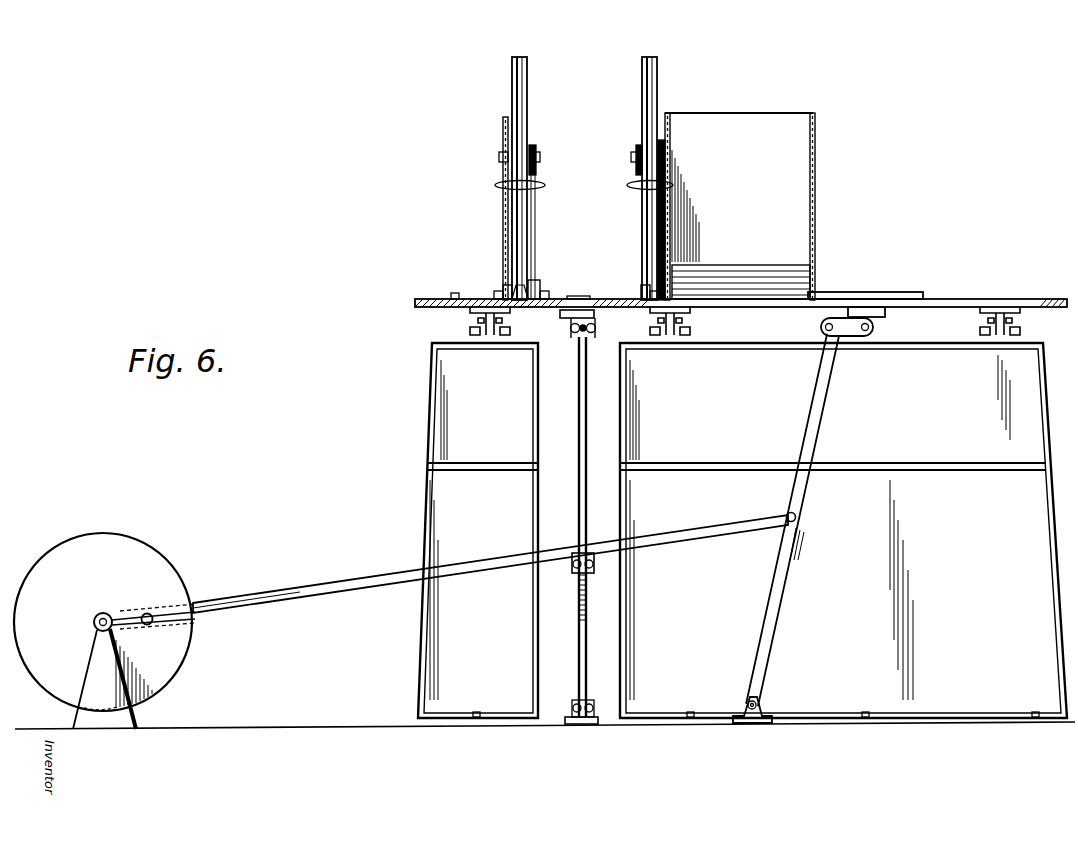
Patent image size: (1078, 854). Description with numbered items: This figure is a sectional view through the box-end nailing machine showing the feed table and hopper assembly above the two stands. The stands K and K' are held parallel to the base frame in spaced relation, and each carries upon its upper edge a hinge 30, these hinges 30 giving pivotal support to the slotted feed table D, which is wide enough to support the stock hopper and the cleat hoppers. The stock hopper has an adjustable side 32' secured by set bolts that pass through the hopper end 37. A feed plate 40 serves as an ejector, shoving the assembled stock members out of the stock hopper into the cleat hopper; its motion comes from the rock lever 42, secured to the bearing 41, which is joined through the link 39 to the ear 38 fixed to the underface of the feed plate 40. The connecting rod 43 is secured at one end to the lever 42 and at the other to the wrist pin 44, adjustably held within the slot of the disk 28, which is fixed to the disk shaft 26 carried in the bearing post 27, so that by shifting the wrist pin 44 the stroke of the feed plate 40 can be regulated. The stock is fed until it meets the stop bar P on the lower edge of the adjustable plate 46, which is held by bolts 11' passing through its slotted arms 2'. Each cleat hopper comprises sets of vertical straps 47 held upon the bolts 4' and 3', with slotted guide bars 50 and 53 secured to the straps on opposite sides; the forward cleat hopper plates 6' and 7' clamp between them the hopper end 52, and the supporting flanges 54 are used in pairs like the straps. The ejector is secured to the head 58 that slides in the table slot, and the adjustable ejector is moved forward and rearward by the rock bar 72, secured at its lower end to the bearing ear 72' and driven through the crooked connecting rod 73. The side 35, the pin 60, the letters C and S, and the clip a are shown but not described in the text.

The slotted arm 2' is at (741, 290).
The lower bolt 3' is at (570, 278).
The upper bolt 4' is at (487, 152).
The cleat hopper plate 6' is at (581, 66).
The cleat hopper plate 7' is at (584, 70).
The bolt 11' is at (445, 270).
The disk shaft 26 is at (105, 612).
The bearing post 27 is at (104, 679).
The disk 28 is at (122, 536).
The hinge 30 is at (480, 326).
The adjustable side 32' is at (739, 94).
The frame side 35 is at (815, 217).
The hopper end 37 is at (672, 120).
The ear 38 is at (878, 312).
The link 39 is at (850, 336).
The feed plate 40 is at (878, 292).
The bearing 41 is at (752, 723).
The rock lever 42 is at (775, 605).
The connecting rod 43 is at (340, 583).
The wrist pin 44 is at (149, 613).
The adjustable plate 46 is at (503, 217).
The strap 47 is at (503, 184).
The slotted guide bar 50 is at (503, 132).
The hopper end 52 is at (521, 58).
The slotted guide bar 53 is at (536, 146).
The supporting flange 54 is at (496, 294).
The head 58 is at (570, 325).
The pivot pin 60 is at (587, 333).
The rock bar 72 is at (596, 527).
The bearing ear 72' is at (570, 729).
The crooked connecting rod 73 is at (580, 600).
The carrier C is at (530, 260).
The spring S is at (598, 297).
The stop bar P is at (517, 307).
The stand K is at (843, 530).
The stand K' is at (478, 530).
The slotted feed table D is at (1046, 299).
The clip a is at (990, 299).